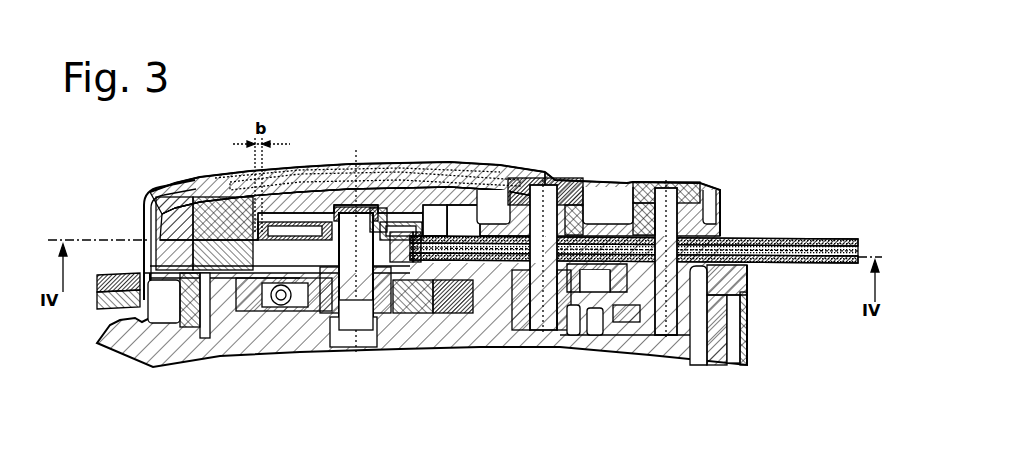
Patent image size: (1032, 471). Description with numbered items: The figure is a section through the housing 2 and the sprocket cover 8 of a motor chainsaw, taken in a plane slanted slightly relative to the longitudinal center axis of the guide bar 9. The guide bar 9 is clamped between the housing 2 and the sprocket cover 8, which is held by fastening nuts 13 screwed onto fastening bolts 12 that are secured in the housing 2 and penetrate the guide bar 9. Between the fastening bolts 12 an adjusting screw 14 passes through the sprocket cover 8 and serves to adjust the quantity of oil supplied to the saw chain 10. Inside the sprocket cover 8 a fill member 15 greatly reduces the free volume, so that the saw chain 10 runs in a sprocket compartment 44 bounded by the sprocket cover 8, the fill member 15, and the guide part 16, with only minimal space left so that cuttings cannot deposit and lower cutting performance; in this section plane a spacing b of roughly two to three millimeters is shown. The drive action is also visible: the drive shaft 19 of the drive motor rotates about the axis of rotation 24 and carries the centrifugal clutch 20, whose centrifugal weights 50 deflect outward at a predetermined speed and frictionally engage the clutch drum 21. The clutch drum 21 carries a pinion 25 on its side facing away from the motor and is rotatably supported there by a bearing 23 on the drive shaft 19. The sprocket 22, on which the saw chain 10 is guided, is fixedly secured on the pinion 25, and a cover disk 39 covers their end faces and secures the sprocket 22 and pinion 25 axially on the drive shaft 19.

The housing 2 is at (733, 297).
The sprocket cover 8 is at (186, 178).
The guide bar 9 is at (800, 239).
The saw chain 10 is at (287, 200).
The fastening bolt 12 is at (548, 192).
The fastening nut 13 is at (570, 205).
The adjusting screw 14 is at (586, 250).
The fill member 15 is at (146, 216).
The guide part 16 is at (153, 186).
The drive shaft 19 is at (363, 333).
The centrifugal clutch 20 is at (268, 322).
The clutch drum 21 is at (238, 268).
The sprocket 22 is at (312, 233).
The bearing 23 is at (346, 214).
The axis of rotation 24 is at (355, 352).
The pinion 25 is at (383, 225).
The cover disk 39 is at (422, 216).
The sprocket compartment 44 is at (425, 240).
The centrifugal weight 50 is at (458, 314).